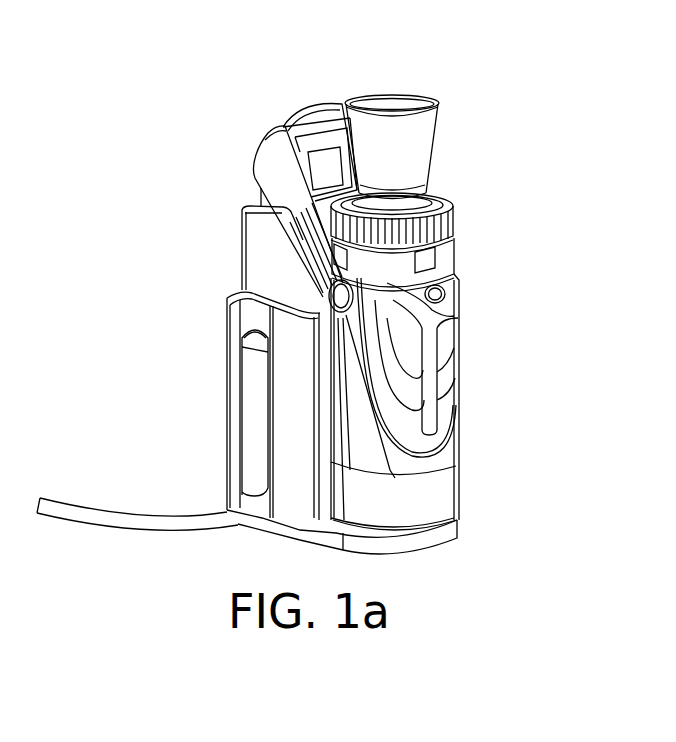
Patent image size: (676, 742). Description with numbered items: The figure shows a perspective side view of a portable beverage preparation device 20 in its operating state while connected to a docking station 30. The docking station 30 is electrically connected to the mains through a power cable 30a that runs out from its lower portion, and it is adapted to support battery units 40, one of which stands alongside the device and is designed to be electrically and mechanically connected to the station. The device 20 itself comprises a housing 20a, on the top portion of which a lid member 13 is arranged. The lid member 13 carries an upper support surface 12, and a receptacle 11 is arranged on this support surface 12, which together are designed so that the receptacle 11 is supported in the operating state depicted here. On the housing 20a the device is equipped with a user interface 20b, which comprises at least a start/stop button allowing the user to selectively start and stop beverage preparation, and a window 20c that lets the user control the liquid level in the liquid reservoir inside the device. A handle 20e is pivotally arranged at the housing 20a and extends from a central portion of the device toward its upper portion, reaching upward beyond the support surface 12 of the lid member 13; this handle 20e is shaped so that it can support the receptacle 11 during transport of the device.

The receptacle 11 is at (437, 153).
The upper support surface 12 is at (437, 198).
The lid member 13 is at (450, 246).
The portable beverage preparation device 20 is at (473, 325).
The housing 20a is at (458, 410).
The user interface 20b is at (440, 293).
The window 20c is at (434, 392).
The handle 20e is at (268, 137).
The docking station 30 is at (249, 190).
The power cable 30a is at (84, 515).
The battery units 40 is at (233, 312).